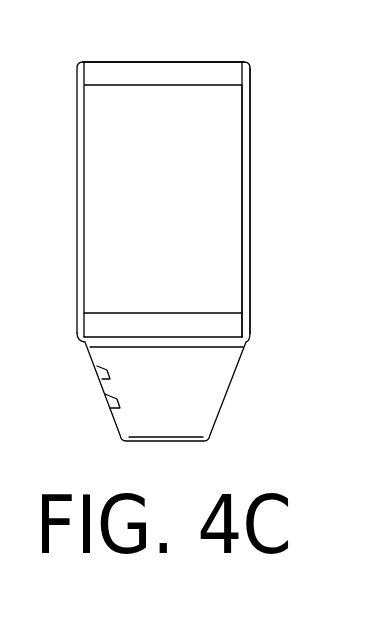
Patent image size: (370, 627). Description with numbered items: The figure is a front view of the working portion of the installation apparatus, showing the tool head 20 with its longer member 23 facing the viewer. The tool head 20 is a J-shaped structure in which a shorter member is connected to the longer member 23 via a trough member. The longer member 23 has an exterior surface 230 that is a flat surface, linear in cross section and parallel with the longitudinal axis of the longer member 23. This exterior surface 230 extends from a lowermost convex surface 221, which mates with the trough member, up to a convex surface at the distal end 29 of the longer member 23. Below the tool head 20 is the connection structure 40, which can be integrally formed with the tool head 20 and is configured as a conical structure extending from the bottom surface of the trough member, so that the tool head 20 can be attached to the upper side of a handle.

The tool head 20 is at (199, 176).
The distal end 29 is at (192, 62).
The longer member 23 is at (218, 134).
The exterior surface 230 is at (218, 195).
The lowermost convex surface 221 is at (218, 328).
The connection structure 40 is at (205, 392).